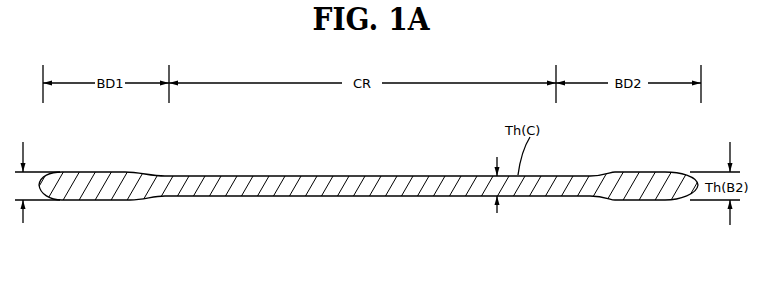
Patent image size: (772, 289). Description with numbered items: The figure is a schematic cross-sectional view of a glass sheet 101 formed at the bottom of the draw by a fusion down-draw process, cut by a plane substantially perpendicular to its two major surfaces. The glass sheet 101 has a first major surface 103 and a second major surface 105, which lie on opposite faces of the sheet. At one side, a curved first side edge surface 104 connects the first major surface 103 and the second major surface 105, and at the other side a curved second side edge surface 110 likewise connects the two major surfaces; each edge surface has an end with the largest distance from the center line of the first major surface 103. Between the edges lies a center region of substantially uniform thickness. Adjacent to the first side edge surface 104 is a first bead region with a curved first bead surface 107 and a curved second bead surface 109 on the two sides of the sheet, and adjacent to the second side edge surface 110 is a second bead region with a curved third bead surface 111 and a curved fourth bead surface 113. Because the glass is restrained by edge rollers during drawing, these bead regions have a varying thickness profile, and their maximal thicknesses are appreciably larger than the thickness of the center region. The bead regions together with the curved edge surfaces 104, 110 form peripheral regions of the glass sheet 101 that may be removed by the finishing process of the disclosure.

The glass sheet 101 is at (247, 108).
The first major surface 103 is at (342, 197).
The curved first side edge surface 104 is at (43, 178).
The second major surface 105 is at (303, 176).
The curved first bead surface 107 is at (97, 200).
The curved second bead surface 109 is at (97, 172).
The curved second side edge surface 110 is at (690, 200).
The curved third bead surface 111 is at (635, 200).
The curved fourth bead surface 113 is at (649, 172).